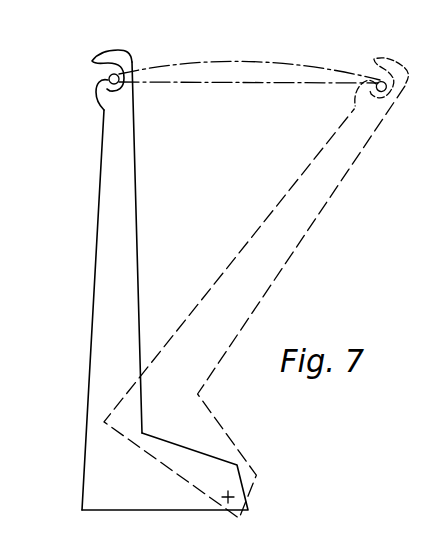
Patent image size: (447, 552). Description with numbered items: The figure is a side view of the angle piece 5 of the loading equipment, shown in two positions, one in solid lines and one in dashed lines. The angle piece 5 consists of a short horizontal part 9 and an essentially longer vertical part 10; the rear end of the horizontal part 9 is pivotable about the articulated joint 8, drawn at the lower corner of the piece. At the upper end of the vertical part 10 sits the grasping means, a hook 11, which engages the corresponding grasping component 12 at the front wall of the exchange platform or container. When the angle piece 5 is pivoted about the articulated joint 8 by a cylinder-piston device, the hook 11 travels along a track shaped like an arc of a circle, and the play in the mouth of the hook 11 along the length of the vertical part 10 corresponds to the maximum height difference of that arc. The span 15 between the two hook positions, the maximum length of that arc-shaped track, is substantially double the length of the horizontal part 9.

The angle piece 5 is at (237, 268).
The articulated joint 8 is at (232, 496).
The horizontal part 9 is at (117, 492).
The vertical part 10 is at (108, 210).
The hook 11 is at (134, 57).
The grasping component 12 is at (109, 79).
The span 15 is at (248, 82).